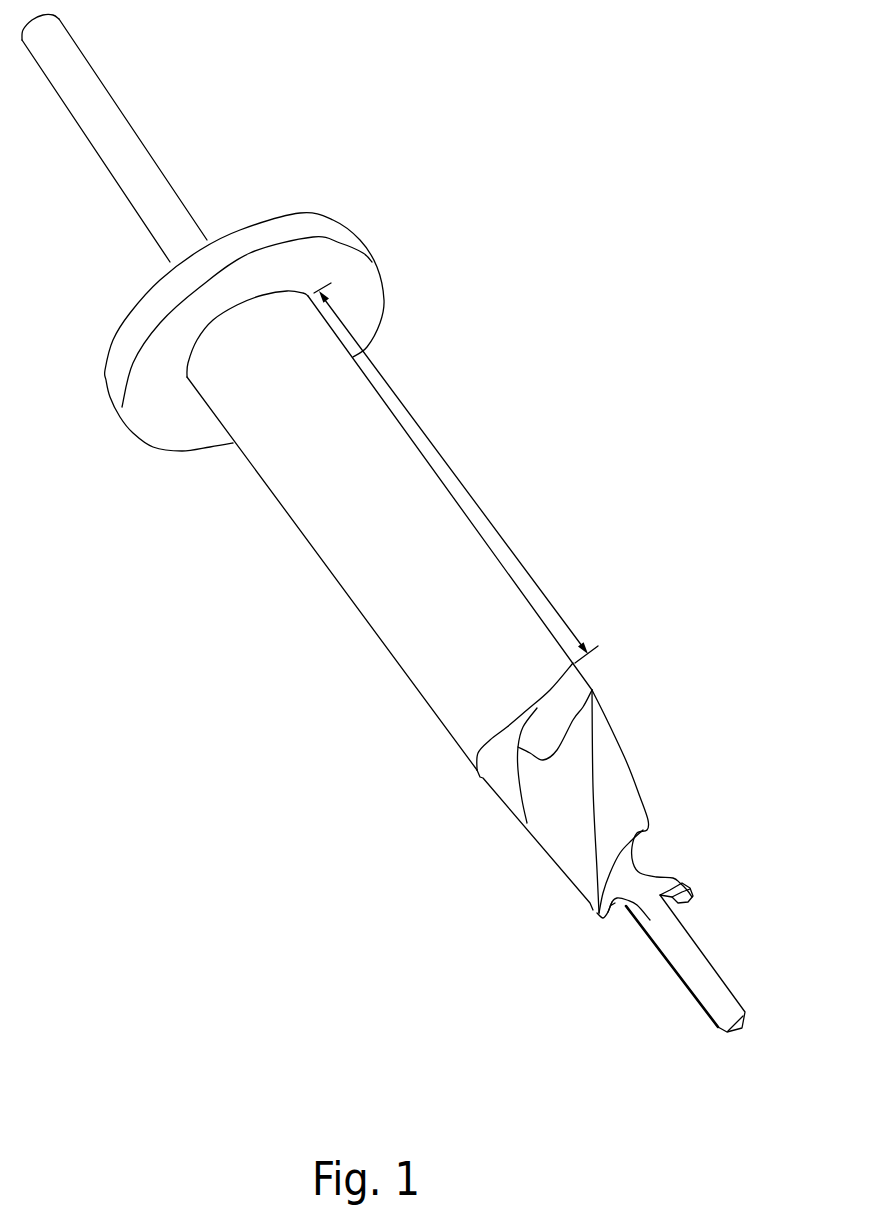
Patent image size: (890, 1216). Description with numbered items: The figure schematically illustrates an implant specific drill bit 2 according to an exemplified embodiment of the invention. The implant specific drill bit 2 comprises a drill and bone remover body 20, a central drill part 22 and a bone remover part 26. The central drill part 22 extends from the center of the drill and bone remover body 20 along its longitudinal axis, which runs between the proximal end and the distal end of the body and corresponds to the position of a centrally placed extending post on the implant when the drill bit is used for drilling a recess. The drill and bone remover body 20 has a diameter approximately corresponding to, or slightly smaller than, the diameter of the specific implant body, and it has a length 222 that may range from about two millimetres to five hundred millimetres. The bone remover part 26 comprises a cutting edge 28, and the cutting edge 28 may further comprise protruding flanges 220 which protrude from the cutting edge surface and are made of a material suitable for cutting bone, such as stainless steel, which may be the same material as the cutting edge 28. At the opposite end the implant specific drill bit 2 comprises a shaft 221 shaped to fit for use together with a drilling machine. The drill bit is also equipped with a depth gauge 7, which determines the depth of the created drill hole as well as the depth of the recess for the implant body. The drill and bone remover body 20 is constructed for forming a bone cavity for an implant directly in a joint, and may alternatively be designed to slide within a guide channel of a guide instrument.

The implant specific drill bit 2 is at (509, 273).
The shaft 221 is at (120, 132).
The depth gauge 7 is at (333, 230).
The length 222 is at (443, 453).
The drill and bone remover body 20 is at (345, 597).
The bone remover part 26 is at (633, 758).
The protruding flanges 220 is at (690, 880).
The cutting edge 28 is at (687, 902).
The central drill part 22 is at (720, 1002).